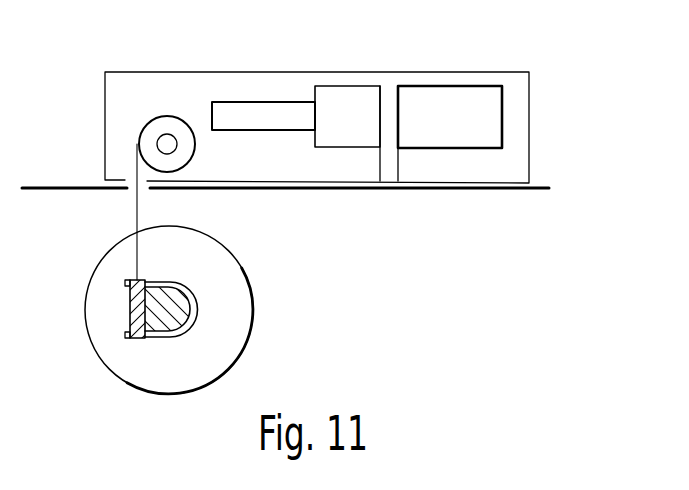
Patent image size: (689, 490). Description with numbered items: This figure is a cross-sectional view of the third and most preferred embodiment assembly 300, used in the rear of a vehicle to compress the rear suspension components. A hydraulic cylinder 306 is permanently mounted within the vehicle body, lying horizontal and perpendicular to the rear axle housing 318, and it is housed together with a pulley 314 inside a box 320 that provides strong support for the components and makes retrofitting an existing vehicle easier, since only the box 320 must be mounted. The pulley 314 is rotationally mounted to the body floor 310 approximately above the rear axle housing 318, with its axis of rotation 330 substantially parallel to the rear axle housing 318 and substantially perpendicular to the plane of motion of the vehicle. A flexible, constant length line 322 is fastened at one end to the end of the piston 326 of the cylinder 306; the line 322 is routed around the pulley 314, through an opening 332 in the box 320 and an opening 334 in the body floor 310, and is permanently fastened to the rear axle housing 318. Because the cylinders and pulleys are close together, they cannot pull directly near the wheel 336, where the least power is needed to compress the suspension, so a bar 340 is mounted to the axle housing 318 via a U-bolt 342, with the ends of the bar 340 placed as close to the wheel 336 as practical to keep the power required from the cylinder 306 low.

The assembly 300 is at (201, 56).
The hydraulic cylinder 306 is at (483, 157).
The body floor 310 is at (477, 191).
The pulley 314 is at (196, 155).
The rear axle housing 318 is at (183, 318).
The box 320 is at (268, 72).
The flexible, constant length line 322 is at (135, 192).
The piston 326 is at (270, 132).
The axis of rotation 330 is at (163, 135).
The opening in the box 332 is at (130, 178).
The opening in the body floor 334 is at (147, 186).
The wheel 336 is at (242, 267).
The bar 340 is at (130, 306).
The U-bolt 342 is at (163, 281).